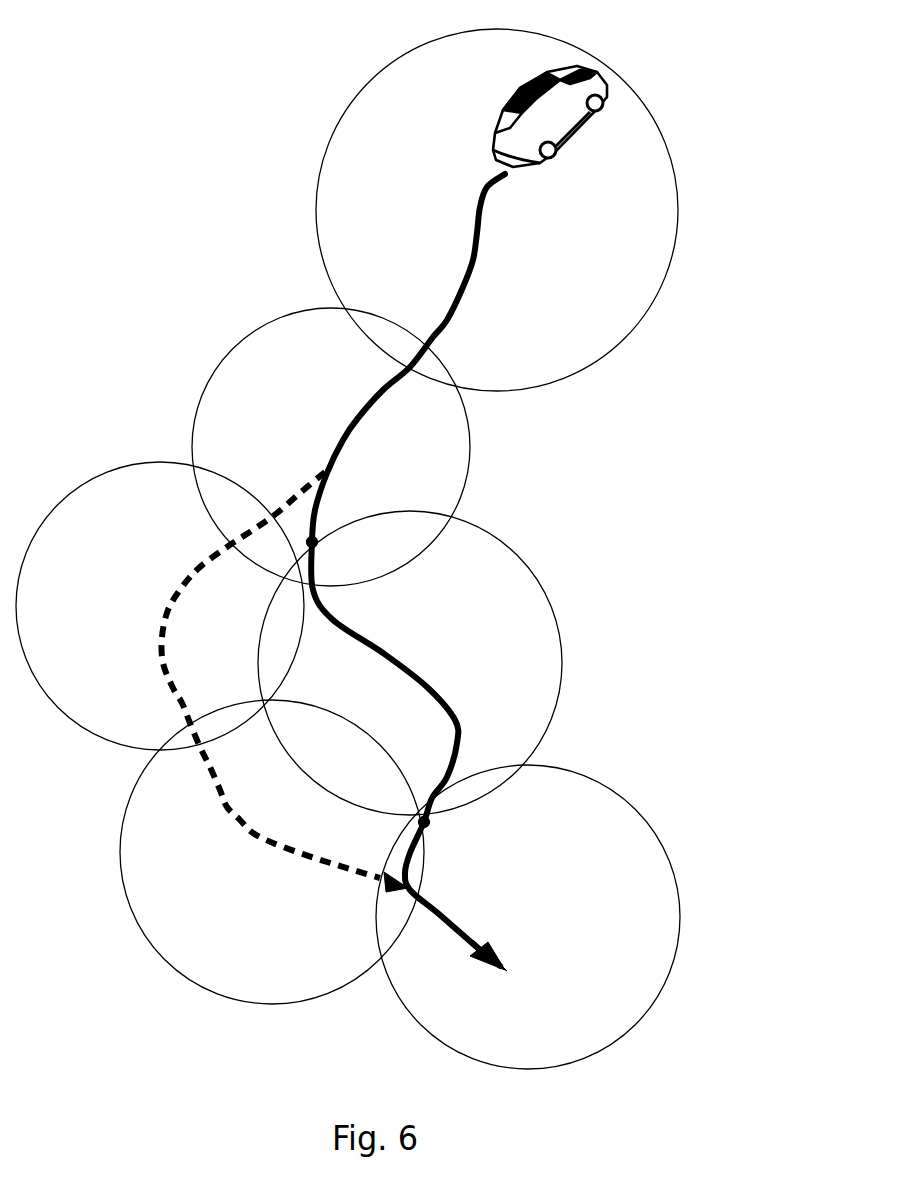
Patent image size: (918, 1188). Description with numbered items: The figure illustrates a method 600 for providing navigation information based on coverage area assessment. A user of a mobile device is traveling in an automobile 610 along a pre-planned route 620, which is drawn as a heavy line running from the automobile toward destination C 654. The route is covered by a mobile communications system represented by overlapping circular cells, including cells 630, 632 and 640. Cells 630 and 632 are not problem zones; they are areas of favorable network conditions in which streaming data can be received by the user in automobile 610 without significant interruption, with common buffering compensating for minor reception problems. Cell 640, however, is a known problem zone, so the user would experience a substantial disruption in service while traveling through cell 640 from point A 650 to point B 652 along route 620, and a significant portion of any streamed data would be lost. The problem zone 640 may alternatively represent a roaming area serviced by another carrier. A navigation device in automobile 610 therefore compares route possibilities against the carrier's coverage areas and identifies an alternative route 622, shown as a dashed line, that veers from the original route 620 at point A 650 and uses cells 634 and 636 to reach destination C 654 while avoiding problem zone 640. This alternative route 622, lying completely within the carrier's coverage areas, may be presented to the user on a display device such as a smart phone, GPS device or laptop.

The method for providing navigation information based on coverage area assessment 600 is at (146, 95).
The automobile 610 is at (594, 74).
The pre-planned route 620 is at (457, 298).
The alternative route 622 is at (227, 807).
The cell 630 is at (470, 477).
The cell 632 is at (697, 840).
The cell 634 is at (100, 476).
The cell 636 is at (147, 938).
The problem zone cell 640 is at (562, 652).
The point A 650 is at (365, 480).
The point B 652 is at (580, 822).
The destination C 654 is at (593, 999).